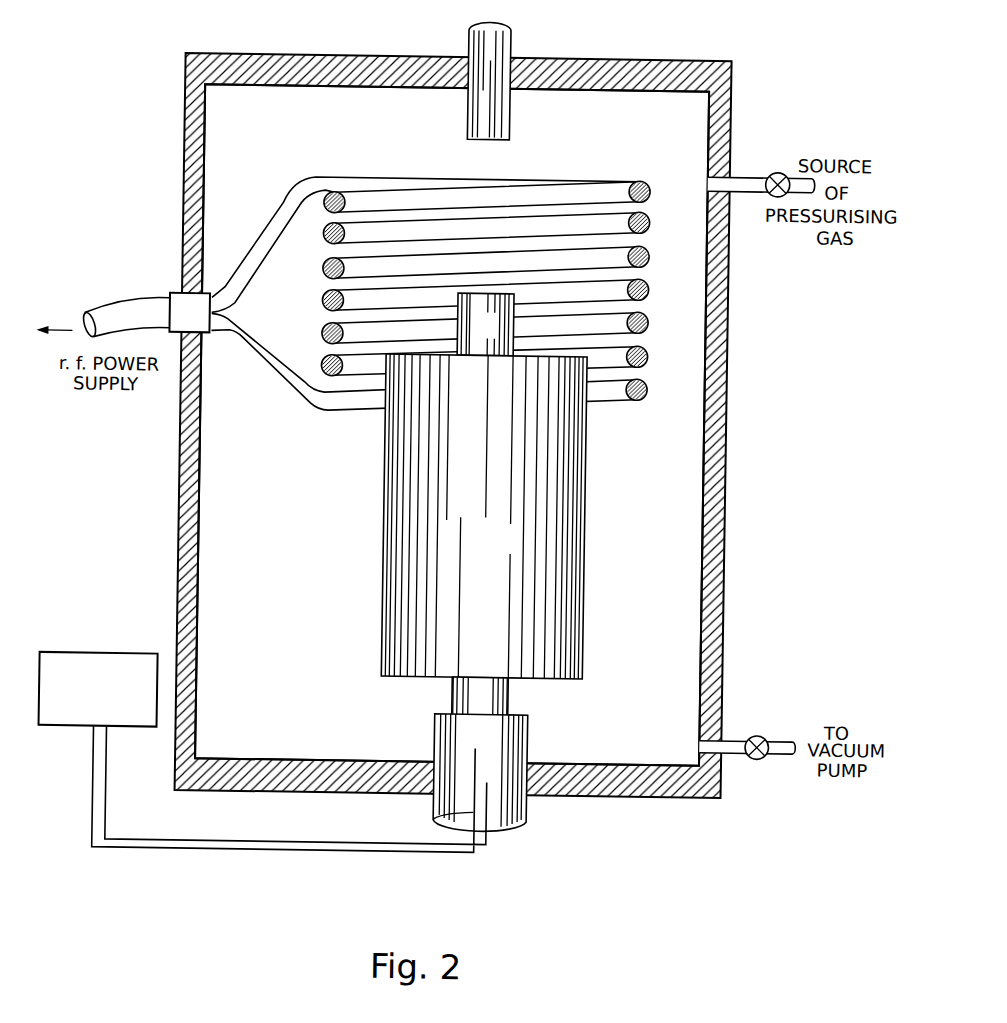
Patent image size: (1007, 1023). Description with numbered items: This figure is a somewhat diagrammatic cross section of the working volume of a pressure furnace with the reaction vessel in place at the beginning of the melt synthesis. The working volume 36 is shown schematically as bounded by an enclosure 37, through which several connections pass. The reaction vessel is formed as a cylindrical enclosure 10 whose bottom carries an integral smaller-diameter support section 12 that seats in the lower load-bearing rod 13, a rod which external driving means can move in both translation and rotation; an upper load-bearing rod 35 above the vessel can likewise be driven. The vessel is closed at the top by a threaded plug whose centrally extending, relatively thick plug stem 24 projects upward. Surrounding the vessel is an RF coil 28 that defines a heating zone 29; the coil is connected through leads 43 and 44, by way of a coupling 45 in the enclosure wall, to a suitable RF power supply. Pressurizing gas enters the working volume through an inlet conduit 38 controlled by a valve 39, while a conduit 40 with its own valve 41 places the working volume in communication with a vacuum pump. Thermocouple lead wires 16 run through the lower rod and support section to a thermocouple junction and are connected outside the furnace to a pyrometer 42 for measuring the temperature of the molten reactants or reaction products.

The cylindrical enclosure 10 is at (466, 554).
The support section 12 is at (514, 696).
The lower load-bearing rod 13 is at (512, 736).
The thermocouple lead wires 16 is at (491, 848).
The plug stem 24 is at (497, 334).
The RF coil 28 is at (450, 295).
The heating zone 29 is at (631, 302).
The upper load-bearing rod 35 is at (504, 37).
The working volume 36 is at (688, 492).
The enclosure 37 is at (717, 438).
The inlet conduit 38 is at (730, 178).
The valve 39 is at (773, 168).
The conduit 40 is at (731, 743).
The valve 41 is at (763, 754).
The pyrometer 42 is at (110, 658).
The lead 43 is at (281, 205).
The lead 44 is at (242, 343).
The coupling 45 is at (176, 302).